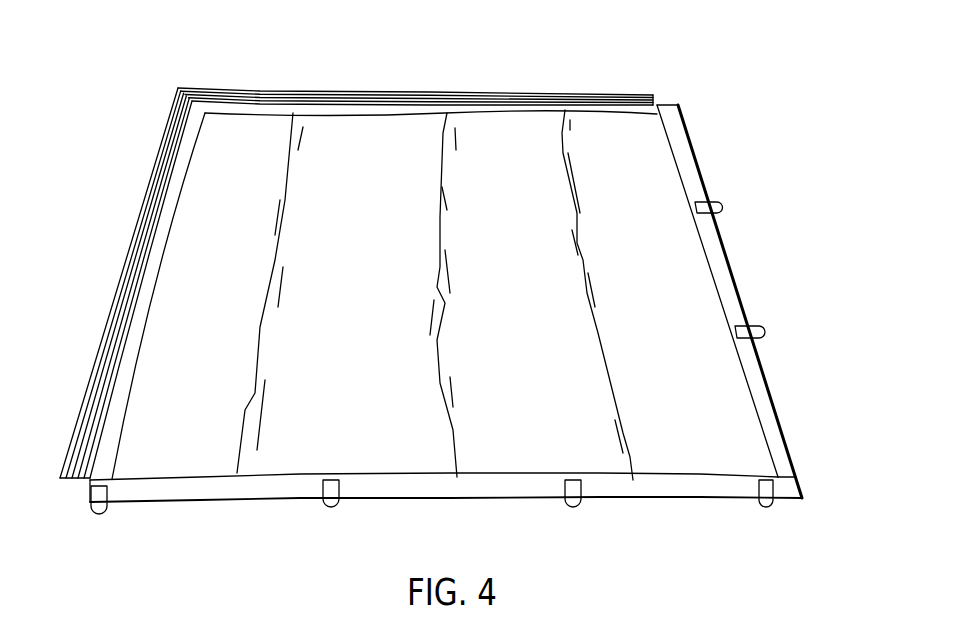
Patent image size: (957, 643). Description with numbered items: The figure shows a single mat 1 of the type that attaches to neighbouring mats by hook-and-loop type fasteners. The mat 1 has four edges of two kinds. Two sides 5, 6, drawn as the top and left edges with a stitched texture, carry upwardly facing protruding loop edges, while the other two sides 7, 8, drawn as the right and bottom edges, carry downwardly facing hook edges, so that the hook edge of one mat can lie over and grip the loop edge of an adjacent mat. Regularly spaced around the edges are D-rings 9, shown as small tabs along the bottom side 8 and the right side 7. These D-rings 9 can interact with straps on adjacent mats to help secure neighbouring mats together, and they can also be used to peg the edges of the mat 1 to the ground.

The mat 1 is at (807, 76).
The side with upwardly facing loop edge 5 is at (428, 92).
The side with upwardly facing loop edge 6 is at (131, 250).
The side with downwardly facing hook edge 7 is at (703, 172).
The side with downwardly facing hook edge 8 is at (259, 502).
The D-rings 9 is at (768, 508).